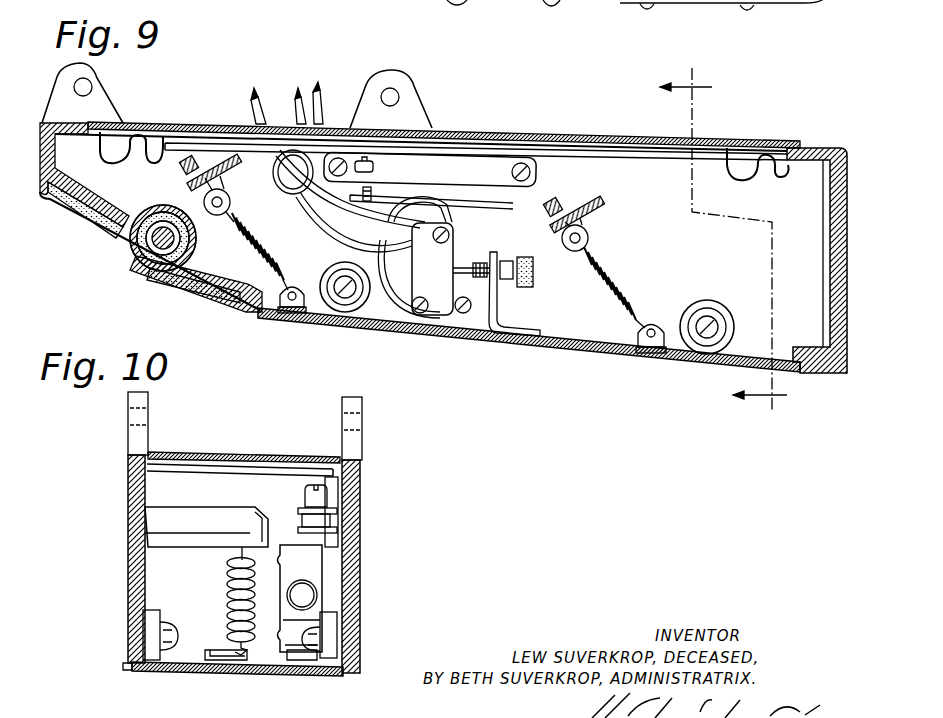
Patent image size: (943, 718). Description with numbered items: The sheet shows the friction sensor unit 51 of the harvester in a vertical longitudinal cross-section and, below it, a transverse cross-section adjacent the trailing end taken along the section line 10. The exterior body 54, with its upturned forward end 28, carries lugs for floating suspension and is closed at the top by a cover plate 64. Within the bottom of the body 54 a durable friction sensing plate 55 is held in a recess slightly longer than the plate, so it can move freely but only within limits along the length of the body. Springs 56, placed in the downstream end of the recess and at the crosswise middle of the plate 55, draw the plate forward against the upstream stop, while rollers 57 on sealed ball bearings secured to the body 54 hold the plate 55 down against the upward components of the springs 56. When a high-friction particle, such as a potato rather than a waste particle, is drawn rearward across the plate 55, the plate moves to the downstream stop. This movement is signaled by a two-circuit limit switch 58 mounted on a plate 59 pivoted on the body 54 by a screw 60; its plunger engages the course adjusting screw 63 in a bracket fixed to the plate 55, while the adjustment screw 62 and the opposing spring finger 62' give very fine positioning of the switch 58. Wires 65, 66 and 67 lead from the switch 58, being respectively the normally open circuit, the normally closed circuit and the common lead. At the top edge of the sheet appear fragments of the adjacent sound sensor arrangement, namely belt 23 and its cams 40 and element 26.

In FIG. 9, the section line 10- 10 is at (729, 241).
In FIG. 9, the belt 23 is at (510, 0).
In FIG. 9, the element of preceding figure 26 is at (690, 8).
In FIG. 9, the cams 40 is at (553, 5).
In FIG. 9, the upturned forward end 28 is at (110, 251).
In FIG. 10, the upturned forward end 28 is at (206, 527).
In FIG. 9, the friction sensor unit 51 is at (527, 131).
In FIG. 10, the friction sensor unit 51 is at (240, 470).
In FIG. 9, the body 54 is at (828, 147).
In FIG. 10, the body 54 is at (128, 441).
In FIG. 9, the friction sensing plate 55 is at (548, 347).
In FIG. 10, the friction sensing plate 55 is at (237, 669).
In FIG. 9, the springs 56 is at (267, 244).
In FIG. 10, the springs 56 is at (226, 578).
In FIG. 9, the rollers 57 is at (719, 307).
In FIG. 10, the rollers 57 is at (158, 612).
In FIG. 9, the two-circuit limit switch 58 is at (455, 253).
In FIG. 10, the two-circuit limit switch 58 is at (282, 568).
In FIG. 9, the plate 59 is at (393, 310).
In FIG. 10, the plate 59 is at (300, 530).
In FIG. 9, the screw 60 is at (450, 313).
In FIG. 9, the adjustment screw 62 is at (430, 169).
In FIG. 10, the adjustment screw 62 is at (304, 511).
In FIG. 9, the spring finger 62' is at (434, 207).
In FIG. 9, the course adjusting screw 63 is at (535, 282).
In FIG. 10, the course adjusting screw 63 is at (303, 580).
In FIG. 9, the top plate 64 is at (642, 137).
In FIG. 10, the top plate 64 is at (292, 456).
In FIG. 9, the wire 65 is at (318, 96).
In FIG. 9, the wire 66 is at (300, 95).
In FIG. 9, the wire 67 is at (248, 108).
In FIG. 10, the wire 67 is at (301, 514).